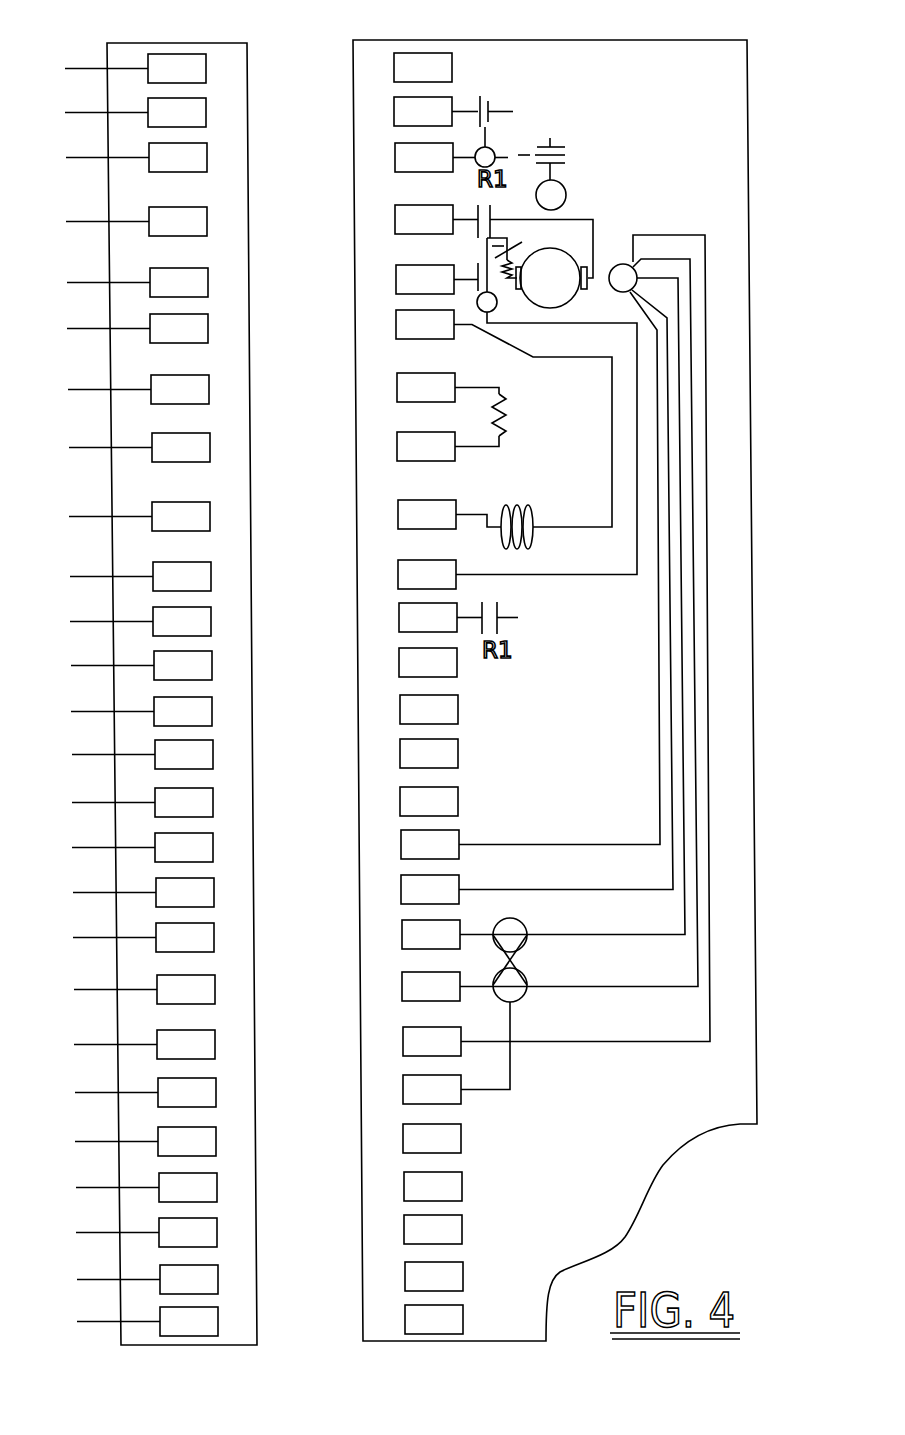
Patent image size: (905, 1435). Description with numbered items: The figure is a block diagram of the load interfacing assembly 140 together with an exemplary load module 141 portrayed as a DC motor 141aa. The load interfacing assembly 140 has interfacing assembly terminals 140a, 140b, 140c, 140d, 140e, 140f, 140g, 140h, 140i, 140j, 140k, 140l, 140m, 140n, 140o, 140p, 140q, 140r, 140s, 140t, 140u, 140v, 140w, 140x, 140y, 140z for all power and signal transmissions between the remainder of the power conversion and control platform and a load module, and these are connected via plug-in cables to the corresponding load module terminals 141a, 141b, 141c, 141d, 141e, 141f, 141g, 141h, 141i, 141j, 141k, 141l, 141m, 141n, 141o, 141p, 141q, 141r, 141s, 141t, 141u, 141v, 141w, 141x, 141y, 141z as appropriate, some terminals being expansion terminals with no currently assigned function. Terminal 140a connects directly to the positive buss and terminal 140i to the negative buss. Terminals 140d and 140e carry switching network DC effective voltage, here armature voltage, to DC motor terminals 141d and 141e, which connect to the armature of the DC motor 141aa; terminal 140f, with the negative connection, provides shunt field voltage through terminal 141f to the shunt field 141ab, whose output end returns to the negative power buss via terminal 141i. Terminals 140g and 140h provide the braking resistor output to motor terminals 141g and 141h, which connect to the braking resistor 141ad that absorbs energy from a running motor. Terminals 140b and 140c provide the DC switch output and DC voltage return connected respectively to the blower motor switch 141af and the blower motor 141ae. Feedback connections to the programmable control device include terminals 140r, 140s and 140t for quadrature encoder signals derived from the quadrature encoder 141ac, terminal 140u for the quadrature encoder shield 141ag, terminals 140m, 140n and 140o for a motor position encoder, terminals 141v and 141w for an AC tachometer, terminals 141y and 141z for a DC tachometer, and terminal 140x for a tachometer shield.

The load interfacing assembly 140 is at (162, 43).
The load module 141 is at (701, 40).
The interfacing assembly terminal 140a is at (148, 74).
The interfacing assembly terminal 140b is at (148, 118).
The interfacing assembly terminal 140c is at (149, 163).
The interfacing assembly terminal 140d is at (149, 227).
The interfacing assembly terminal 140e is at (150, 288).
The interfacing assembly terminal 140f is at (150, 334).
The interfacing assembly terminal 140g is at (151, 395).
The interfacing assembly terminal 140h is at (152, 453).
The interfacing assembly terminal 140i is at (152, 522).
The interfacing assembly terminal 140j is at (153, 582).
The interfacing assembly terminal 140k is at (153, 627).
The interfacing assembly terminal 140l is at (154, 671).
The interfacing assembly terminal 140m is at (154, 717).
The interfacing assembly terminal 140n is at (155, 760).
The interfacing assembly terminal 140o is at (155, 808).
The interfacing assembly terminal 140p is at (155, 853).
The interfacing assembly terminal 140q is at (156, 898).
The interfacing assembly terminal 140r is at (156, 943).
The interfacing assembly terminal 140s is at (157, 995).
The interfacing assembly terminal 140t is at (157, 1050).
The interfacing assembly terminal 140u is at (158, 1098).
The interfacing assembly terminal 140v is at (158, 1147).
The interfacing assembly terminal 140w is at (159, 1193).
The interfacing assembly terminal 140x is at (159, 1238).
The interfacing assembly terminal 140y is at (160, 1285).
The interfacing assembly terminal 140z is at (160, 1327).
The load module terminal 141a is at (394, 68).
The load module terminal 141b is at (394, 112).
The load module terminal 141c is at (395, 158).
The DC motor terminal 141d is at (395, 220).
The DC motor terminal 141e is at (396, 280).
The load module terminal 141f is at (396, 324).
The DC motor terminal 141g is at (397, 388).
The DC motor terminal 141h is at (397, 446).
The load module terminal 141i is at (398, 514).
The load module terminal 141j is at (398, 574).
The load module terminal 141k is at (399, 618).
The load module terminal 141l is at (399, 662).
The load module terminal 141m is at (400, 710).
The load module terminal 141n is at (400, 754).
The load module terminal 141o is at (400, 802).
The load module terminal 141p is at (401, 844).
The load module terminal 141q is at (401, 890).
The load module terminal 141r is at (402, 934).
The load module terminal 141s is at (402, 986).
The load module terminal 141t is at (403, 1042).
The load module terminal 141u is at (403, 1090).
The load module terminal 141v is at (403, 1138).
The load module terminal 141w is at (404, 1186).
The load module terminal 141x is at (404, 1230).
The load module terminal 141y is at (405, 1276).
The load module terminal 141z is at (405, 1320).
The DC motor 141aa is at (572, 257).
The shunt field 141ab is at (515, 505).
The quadrature encoder 141ac is at (620, 264).
The braking resistor 141ad is at (506, 412).
The blower motor 141ae is at (556, 188).
The blower motor switch 141af is at (484, 97).
The quadrature encoder shield 141ag is at (517, 918).